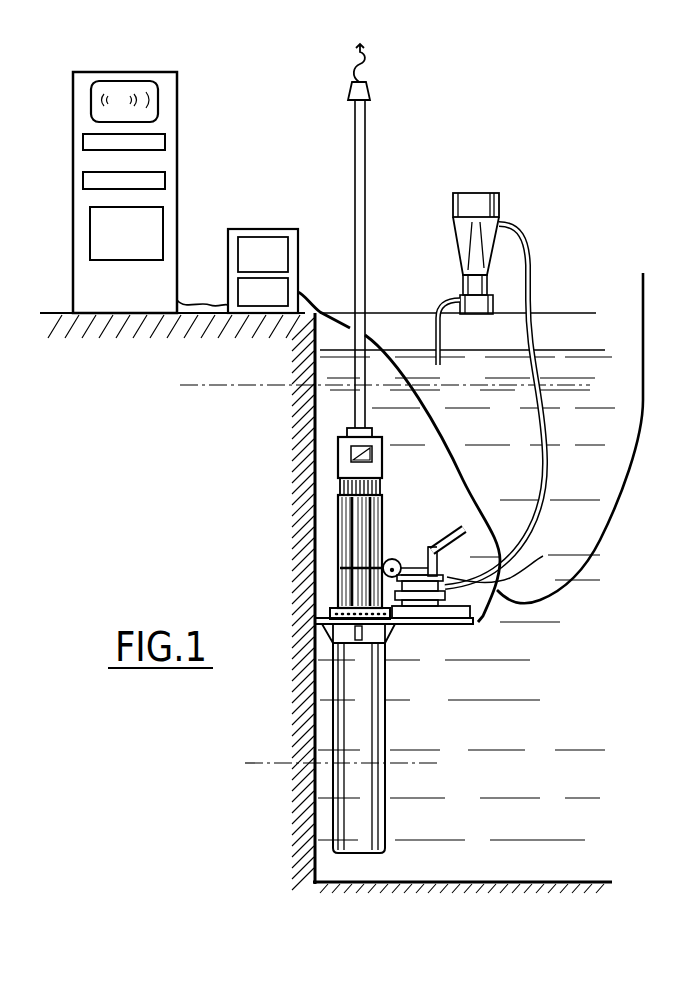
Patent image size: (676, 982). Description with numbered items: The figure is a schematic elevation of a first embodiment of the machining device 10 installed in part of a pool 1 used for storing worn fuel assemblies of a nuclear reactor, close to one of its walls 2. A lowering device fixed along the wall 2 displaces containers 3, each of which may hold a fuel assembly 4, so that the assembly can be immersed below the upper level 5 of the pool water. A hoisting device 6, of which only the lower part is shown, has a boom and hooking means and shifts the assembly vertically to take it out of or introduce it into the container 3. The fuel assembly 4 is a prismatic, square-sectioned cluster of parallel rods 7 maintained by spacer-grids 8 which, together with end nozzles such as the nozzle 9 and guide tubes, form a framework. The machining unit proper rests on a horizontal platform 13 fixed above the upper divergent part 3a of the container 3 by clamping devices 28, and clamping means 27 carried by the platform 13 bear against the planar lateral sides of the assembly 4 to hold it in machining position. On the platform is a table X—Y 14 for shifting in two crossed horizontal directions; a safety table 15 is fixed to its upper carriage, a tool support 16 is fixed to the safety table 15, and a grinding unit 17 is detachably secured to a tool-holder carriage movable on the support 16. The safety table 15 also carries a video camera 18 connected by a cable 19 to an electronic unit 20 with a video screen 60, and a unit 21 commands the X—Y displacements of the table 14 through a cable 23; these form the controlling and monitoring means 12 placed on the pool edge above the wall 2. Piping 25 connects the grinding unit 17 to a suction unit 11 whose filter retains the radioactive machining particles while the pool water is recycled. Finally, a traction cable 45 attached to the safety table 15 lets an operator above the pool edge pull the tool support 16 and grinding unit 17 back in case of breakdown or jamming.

The pool 1 is at (508, 781).
The wall 2 is at (245, 538).
The container 3 is at (372, 723).
The upper divergent part 3a is at (320, 648).
The fuel assembly 4 is at (320, 515).
The upper level 5 is at (590, 352).
The hoisting device 6 is at (369, 176).
The rods 7 is at (378, 522).
The spacer-grids 8 is at (338, 490).
The end nozzle 9 is at (340, 462).
The machining device 10 is at (548, 437).
The suction unit 11 is at (472, 205).
The controlling and monitoring means 12 is at (262, 189).
The horizontal platform 13 is at (430, 627).
The table X—Y 14 is at (470, 624).
The safety table 15 is at (495, 594).
The tool support 16 is at (433, 563).
The grinding unit 17 is at (366, 558).
The video camera 18 is at (447, 540).
The cable 19 is at (490, 513).
The electronic unit 20 is at (85, 263).
The unit 21 is at (246, 242).
The cable 23 is at (510, 554).
The piping 25 is at (532, 300).
The clamping means 27 is at (340, 607).
The clamping devices 28 is at (388, 626).
The traction cable 45 is at (617, 503).
The video screen 60 is at (150, 99).